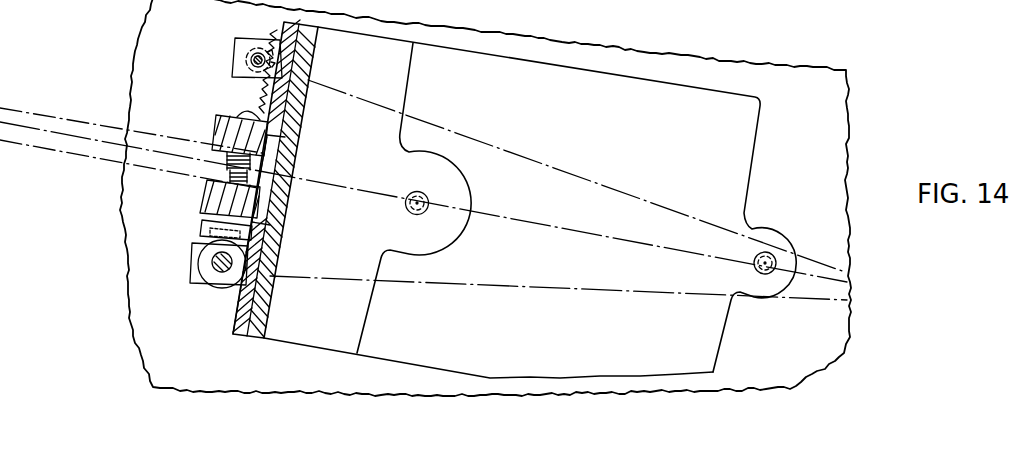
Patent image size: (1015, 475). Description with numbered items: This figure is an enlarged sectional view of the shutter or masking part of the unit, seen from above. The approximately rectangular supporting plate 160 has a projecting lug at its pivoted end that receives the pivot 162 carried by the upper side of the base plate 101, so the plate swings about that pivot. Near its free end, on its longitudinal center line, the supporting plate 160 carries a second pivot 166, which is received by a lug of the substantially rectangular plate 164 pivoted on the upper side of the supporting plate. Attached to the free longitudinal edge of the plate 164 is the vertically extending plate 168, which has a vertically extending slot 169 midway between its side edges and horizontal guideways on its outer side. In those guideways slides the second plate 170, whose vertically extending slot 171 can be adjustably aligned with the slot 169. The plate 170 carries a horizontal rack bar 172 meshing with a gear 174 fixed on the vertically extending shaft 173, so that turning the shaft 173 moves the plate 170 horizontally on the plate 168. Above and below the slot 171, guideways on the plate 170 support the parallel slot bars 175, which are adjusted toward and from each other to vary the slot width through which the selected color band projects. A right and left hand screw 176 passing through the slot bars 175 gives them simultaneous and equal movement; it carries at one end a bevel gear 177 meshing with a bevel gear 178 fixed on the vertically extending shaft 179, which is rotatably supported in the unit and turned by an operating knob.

The base plate 101 is at (826, 102).
The supporting plate 160 is at (612, 112).
The pivot 162 is at (776, 250).
The plate 164 is at (407, 86).
The pivot 166 is at (431, 201).
The vertically extending plate 168 is at (305, 58).
The vertically extending slot 169 is at (290, 158).
The second plate 170 is at (273, 240).
The vertically extending slot 171 is at (268, 204).
The horizontal rack bar 172 is at (274, 33).
The vertically extending shaft 173 is at (256, 64).
The gear 174 is at (236, 57).
The slot bars 175 is at (216, 125).
The right and left hand screw 176 is at (222, 163).
The bevel gear 177 is at (202, 232).
The bevel gear 178 is at (192, 270).
The vertically extending shaft 179 is at (221, 273).